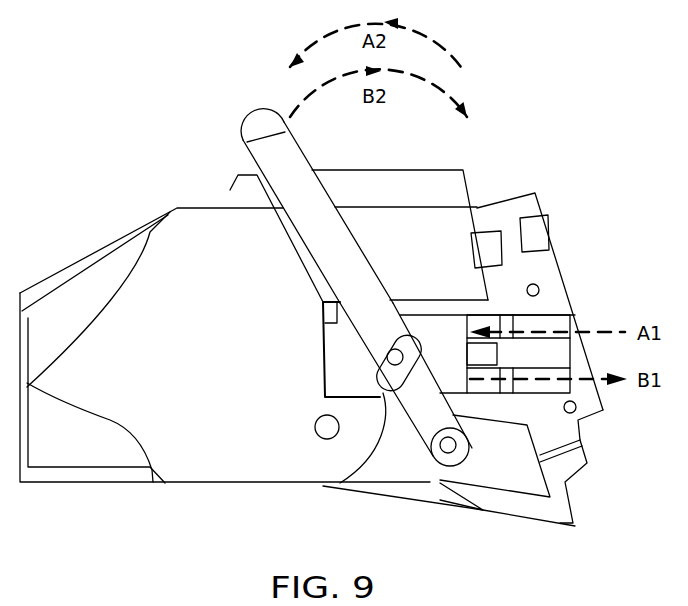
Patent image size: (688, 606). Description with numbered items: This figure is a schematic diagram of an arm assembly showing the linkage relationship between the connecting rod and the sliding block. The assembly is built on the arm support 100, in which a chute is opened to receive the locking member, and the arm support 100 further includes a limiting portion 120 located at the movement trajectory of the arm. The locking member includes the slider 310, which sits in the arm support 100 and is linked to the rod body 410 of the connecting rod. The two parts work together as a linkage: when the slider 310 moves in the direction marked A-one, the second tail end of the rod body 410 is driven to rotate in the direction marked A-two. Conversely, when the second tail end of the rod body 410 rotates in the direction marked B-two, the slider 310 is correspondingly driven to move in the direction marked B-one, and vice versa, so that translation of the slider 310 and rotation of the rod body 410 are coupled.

The arm support 100 is at (173, 358).
The limiting portion 120 is at (237, 200).
The slider 310 is at (347, 370).
The rod body 410 is at (273, 155).